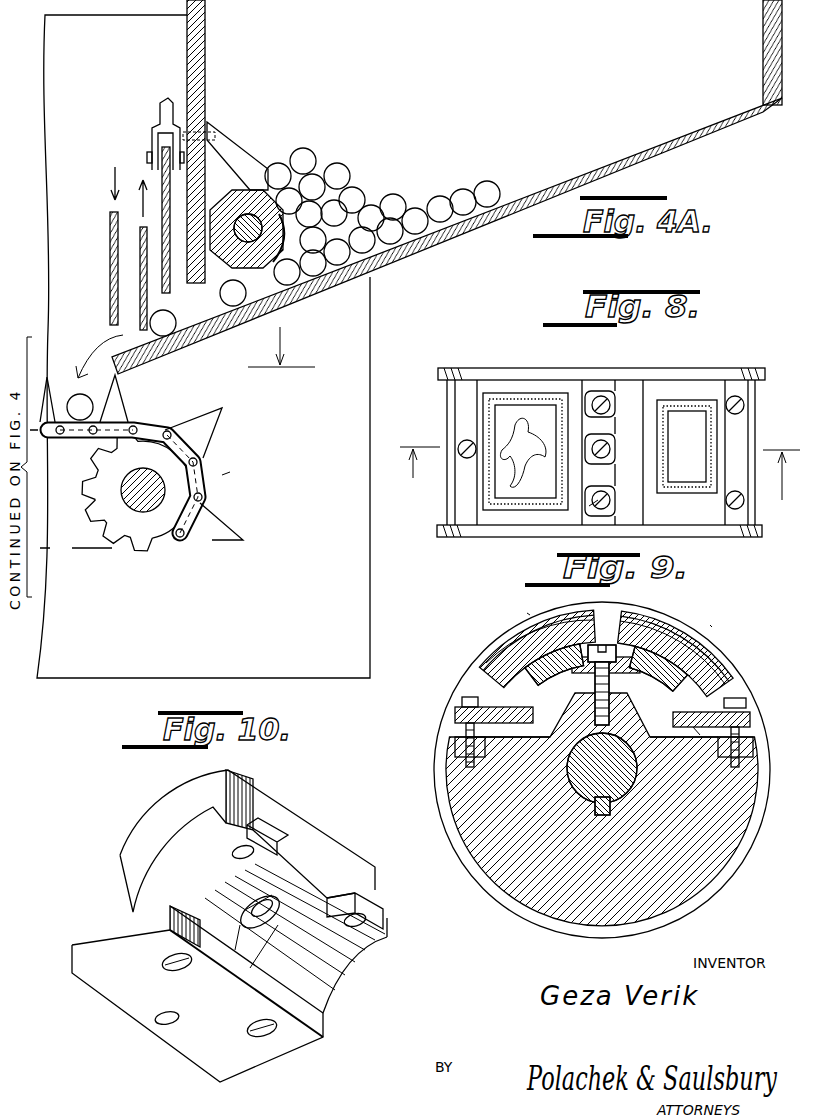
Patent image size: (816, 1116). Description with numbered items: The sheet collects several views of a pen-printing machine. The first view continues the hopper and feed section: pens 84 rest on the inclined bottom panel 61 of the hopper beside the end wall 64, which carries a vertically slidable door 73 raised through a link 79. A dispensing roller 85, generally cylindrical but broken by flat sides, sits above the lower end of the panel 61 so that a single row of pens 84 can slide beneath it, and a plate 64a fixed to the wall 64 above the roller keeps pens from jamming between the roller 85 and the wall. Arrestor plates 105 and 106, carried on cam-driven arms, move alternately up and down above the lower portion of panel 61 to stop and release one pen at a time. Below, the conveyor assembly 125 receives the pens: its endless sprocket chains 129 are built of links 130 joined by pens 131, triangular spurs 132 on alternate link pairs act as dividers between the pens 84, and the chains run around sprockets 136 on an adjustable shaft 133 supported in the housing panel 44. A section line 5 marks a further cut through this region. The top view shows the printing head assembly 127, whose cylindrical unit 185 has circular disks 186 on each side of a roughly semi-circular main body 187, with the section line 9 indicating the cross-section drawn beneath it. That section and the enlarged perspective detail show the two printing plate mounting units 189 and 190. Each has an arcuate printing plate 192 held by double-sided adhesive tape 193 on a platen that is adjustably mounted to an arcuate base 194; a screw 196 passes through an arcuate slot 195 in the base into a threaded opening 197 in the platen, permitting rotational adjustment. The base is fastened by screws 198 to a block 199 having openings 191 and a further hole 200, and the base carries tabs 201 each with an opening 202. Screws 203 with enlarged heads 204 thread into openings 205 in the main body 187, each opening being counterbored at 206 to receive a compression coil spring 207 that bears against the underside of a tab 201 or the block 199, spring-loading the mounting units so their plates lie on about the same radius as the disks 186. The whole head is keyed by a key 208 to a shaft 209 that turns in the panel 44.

In FIG. 4A, the section line 5 is at (281, 347).
In FIG. 4A, the panel 44 is at (308, 620).
In FIG. 4A, the bottom panel 61 is at (575, 170).
In FIG. 4A, the end wall 64 is at (205, 82).
In FIG. 4A, the plate 64a is at (245, 165).
In FIG. 4A, the vertically slidable door 73 is at (163, 187).
In FIG. 4A, the link 79 is at (160, 110).
In FIG. 4A, the pens 84 is at (401, 175).
In FIG. 4A, the dispensing roller 85 is at (233, 188).
In FIG. 4A, the arrestor plate 105 is at (143, 268).
In FIG. 4A, the arrestor plate 106 is at (110, 243).
In FIG. 4A, the conveyor assembly 125 is at (233, 478).
In FIG. 4A, the endless sprocket chains 129 is at (174, 417).
In FIG. 4A, the links 130 is at (207, 467).
In FIG. 4A, the pens 131 is at (187, 543).
In FIG. 4A, the triangularly shaped spur 132 is at (235, 527).
In FIG. 4A, the adjustable shaft 133 is at (157, 508).
In FIG. 4A, the sprockets 136 is at (118, 522).
In FIG. 8, the line 9— 9 is at (600, 485).
In FIG. 8, the printing head assembly 127 is at (725, 343).
In FIG. 9, the printing head assembly 127 is at (542, 948).
In FIG. 8, the cylindrical unit 185 is at (487, 354).
In FIG. 8, the circular disks 186 is at (522, 367).
In FIG. 9, the circular disks 186 is at (485, 882).
In FIG. 9, the main body 187 is at (477, 807).
In FIG. 9, the printing plate mounting unit 189 is at (518, 615).
In FIG. 9, the printing plate mounting unit 190 is at (722, 624).
In FIG. 9, the openings 191 is at (490, 677).
In FIG. 10, the openings 191 is at (153, 817).
In FIG. 8, the arcuate printing plate 192 is at (533, 413).
In FIG. 9, the arcuate printing plate 192 is at (513, 630).
In FIG. 8, the adhesive tape 193 is at (560, 393).
In FIG. 9, the adhesive tape 193 is at (583, 605).
In FIG. 10, the arcuate base 194 is at (138, 898).
In FIG. 10, the arcuate slot 195 is at (268, 960).
In FIG. 9, the screw 196 is at (596, 715).
In FIG. 10, the screw 196 is at (248, 913).
In FIG. 9, the opening 197 is at (480, 670).
In FIG. 9, the screws 198 is at (693, 727).
In FIG. 10, the screws 198 is at (185, 970).
In FIG. 10, the block 199 is at (190, 1060).
In FIG. 10, the hole 200 is at (155, 1022).
In FIG. 8, the tabs 201 is at (585, 504).
In FIG. 10, the tabs 201 is at (263, 830).
In FIG. 10, the opening 202 is at (352, 943).
In FIG. 9, the screws 203 is at (457, 710).
In FIG. 8, the enlarged heads 204 is at (617, 402).
In FIG. 9, the enlarged heads 204 is at (458, 697).
In FIG. 9, the threaded openings 205 is at (462, 767).
In FIG. 9, the counterbore 206 is at (493, 760).
In FIG. 9, the compression coil spring 207 is at (453, 732).
In FIG. 9, the key 208 is at (637, 853).
In FIG. 9, the shaft 209 is at (588, 790).